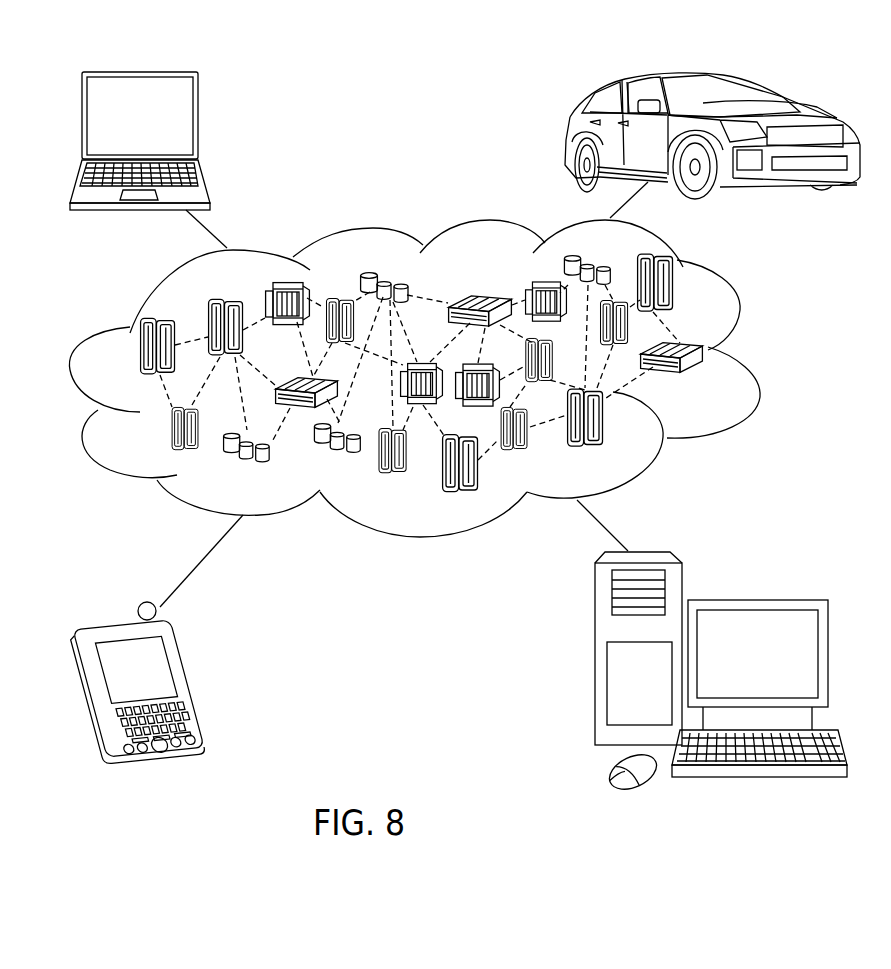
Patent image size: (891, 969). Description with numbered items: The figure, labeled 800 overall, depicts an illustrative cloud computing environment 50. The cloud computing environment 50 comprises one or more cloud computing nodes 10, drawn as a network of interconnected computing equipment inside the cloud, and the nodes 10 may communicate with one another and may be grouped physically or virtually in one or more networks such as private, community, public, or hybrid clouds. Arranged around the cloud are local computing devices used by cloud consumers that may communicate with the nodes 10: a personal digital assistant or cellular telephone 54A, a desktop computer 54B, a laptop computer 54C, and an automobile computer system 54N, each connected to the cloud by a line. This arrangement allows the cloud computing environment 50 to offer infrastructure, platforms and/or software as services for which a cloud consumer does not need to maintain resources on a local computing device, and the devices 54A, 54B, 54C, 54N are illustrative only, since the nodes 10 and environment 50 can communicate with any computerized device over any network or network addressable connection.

The cloud computing environment 800 is at (425, 67).
The cloud computing environment 50 is at (753, 352).
The cloud computing nodes 10 is at (700, 390).
The personal digital assistant (PDA) or cellular telephone 54A is at (193, 678).
The desktop computer 54B is at (757, 600).
The laptop computer 54C is at (198, 121).
The automobile computer system 54N is at (570, 140).